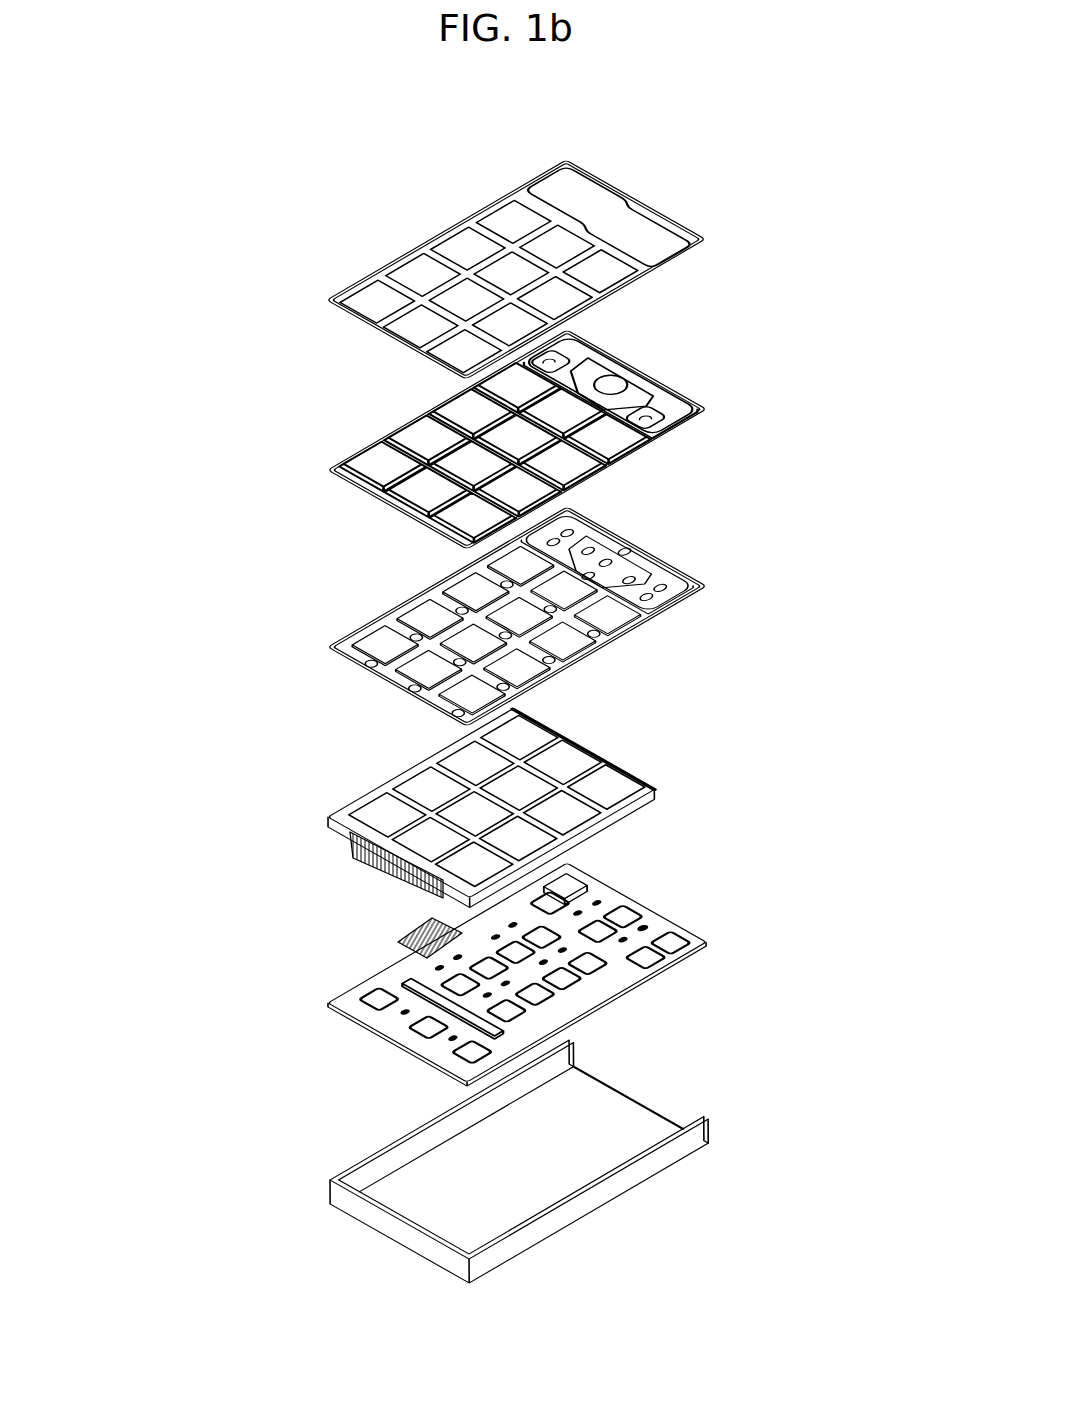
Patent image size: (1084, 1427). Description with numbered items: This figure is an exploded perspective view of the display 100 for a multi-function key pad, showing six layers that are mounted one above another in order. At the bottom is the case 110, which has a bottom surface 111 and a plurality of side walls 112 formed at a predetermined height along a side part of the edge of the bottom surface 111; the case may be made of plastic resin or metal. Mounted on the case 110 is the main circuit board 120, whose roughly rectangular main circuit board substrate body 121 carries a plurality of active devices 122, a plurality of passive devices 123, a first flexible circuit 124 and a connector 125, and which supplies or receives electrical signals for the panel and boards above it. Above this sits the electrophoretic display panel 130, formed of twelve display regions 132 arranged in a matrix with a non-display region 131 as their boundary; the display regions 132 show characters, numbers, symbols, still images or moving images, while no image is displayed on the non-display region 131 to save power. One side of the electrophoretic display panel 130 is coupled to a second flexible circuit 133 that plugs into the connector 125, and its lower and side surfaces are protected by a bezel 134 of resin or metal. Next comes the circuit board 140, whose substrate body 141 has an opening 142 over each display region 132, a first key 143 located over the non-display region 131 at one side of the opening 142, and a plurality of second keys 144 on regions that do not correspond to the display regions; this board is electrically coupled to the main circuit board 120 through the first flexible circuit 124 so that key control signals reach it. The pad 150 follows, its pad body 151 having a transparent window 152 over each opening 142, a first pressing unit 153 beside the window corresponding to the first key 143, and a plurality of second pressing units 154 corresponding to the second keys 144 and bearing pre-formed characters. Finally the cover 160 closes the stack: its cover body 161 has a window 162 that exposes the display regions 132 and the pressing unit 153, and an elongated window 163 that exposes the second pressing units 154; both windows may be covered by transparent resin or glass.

The display for a multi-function key pad 100 is at (285, 245).
The case 110 is at (669, 1093).
The bottom surface 111 is at (657, 1130).
The side walls 112 is at (487, 1270).
The main circuit board 120 is at (718, 927).
The main circuit board substrate body 121 is at (682, 967).
The active devices 122 is at (633, 905).
The passive devices 123 is at (643, 932).
The first flexible circuit 124 is at (420, 935).
The connector 125 is at (410, 978).
The electrophoretic display panel 130 is at (658, 770).
The non-display region 131 is at (550, 775).
The display regions 132 is at (613, 782).
The second flexible circuit 133 is at (372, 864).
The bezel 134 is at (645, 802).
The circuit board 140 is at (684, 614).
The substrate body 141 is at (693, 588).
The opening 142 is at (617, 625).
The first key 143 is at (598, 628).
The second keys 144 is at (653, 590).
The pad 150 is at (680, 376).
The pad body 151 is at (693, 410).
The transparent window 152 is at (620, 445).
The first pressing unit 153 is at (607, 457).
The second pressing units 154 is at (663, 410).
The cover 160 is at (619, 179).
The cover body 161 is at (675, 231).
The window 162 is at (460, 243).
The elongated window 163 is at (553, 190).